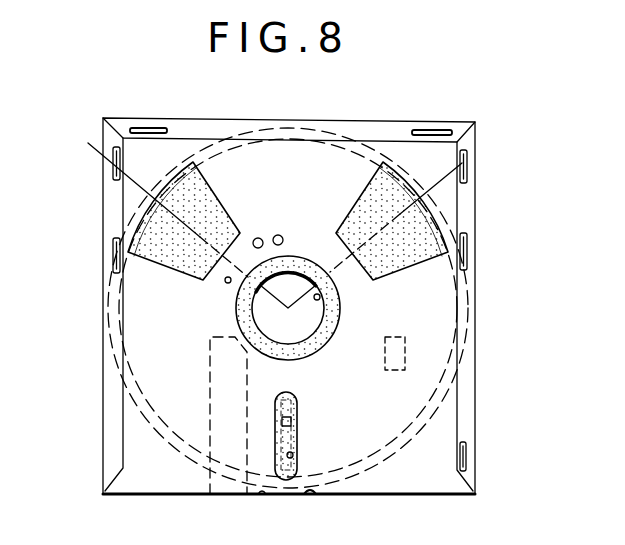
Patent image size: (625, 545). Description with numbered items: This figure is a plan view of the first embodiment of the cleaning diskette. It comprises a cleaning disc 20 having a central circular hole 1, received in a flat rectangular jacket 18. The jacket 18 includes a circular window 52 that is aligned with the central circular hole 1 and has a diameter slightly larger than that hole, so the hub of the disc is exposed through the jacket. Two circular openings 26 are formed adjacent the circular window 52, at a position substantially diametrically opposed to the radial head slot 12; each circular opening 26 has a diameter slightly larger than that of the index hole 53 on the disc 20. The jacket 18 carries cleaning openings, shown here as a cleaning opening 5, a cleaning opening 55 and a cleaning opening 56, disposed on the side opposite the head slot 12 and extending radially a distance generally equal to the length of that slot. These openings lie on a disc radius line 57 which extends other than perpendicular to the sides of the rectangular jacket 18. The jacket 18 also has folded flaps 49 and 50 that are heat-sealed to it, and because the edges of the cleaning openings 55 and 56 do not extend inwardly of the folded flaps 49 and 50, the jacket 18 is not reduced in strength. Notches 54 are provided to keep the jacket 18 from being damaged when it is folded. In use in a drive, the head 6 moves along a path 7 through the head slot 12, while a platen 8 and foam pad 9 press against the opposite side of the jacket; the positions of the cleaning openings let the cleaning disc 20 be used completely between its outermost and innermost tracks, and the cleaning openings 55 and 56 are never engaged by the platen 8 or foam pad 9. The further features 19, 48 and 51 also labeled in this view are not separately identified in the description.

The central circular hole 1 is at (320, 297).
The cleaning opening 5 is at (445, 386).
The head 6 is at (273, 428).
The path 7 is at (292, 422).
The platen 8 is at (208, 422).
The foam pad 9 is at (405, 360).
The radial head slot 12 is at (297, 453).
The jacket 18 is at (477, 255).
The hub center 19 is at (288, 308).
The cleaning disc 20 is at (135, 413).
The circular openings 26 is at (276, 235).
The bottom wall 48 is at (428, 497).
The folded flap 49 is at (108, 158).
The folded flap 50 is at (404, 130).
The slot 51 is at (147, 128).
The circular window 52 is at (340, 308).
The index hole 53 is at (225, 284).
The notches 54 is at (310, 496).
The cleaning opening 55 is at (140, 220).
The cleaning opening 56 is at (452, 212).
The disc radius line 57 is at (120, 270).